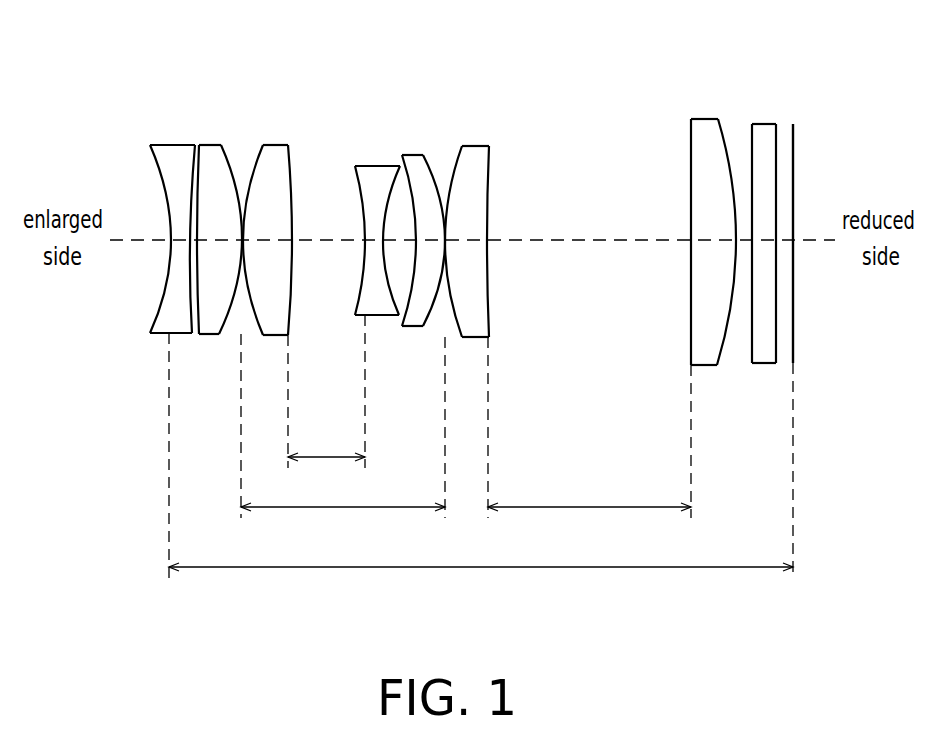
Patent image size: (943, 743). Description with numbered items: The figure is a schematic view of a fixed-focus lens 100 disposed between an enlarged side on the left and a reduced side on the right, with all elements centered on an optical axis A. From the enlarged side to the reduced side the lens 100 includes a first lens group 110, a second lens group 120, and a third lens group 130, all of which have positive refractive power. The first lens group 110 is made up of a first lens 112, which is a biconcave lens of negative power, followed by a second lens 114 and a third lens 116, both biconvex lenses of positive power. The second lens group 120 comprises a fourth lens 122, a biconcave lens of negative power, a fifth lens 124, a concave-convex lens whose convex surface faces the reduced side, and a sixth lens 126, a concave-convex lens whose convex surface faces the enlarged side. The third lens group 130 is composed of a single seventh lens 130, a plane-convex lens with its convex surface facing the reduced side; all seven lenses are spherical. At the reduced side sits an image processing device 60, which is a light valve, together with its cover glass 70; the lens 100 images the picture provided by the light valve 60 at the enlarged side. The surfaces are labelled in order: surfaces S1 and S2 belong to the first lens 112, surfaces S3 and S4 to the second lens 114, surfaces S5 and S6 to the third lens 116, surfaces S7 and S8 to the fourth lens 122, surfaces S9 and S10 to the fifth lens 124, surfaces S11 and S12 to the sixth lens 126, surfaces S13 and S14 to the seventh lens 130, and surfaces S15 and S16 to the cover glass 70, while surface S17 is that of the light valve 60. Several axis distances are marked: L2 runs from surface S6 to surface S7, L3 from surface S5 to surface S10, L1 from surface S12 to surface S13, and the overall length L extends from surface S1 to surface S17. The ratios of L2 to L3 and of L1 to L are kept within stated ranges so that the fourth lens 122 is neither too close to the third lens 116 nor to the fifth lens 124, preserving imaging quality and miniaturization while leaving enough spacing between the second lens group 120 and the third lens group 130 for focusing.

The fixed-focus lens 100 is at (838, 640).
The first lens group 110 is at (150, 428).
The first lens 112 is at (111, 253).
The second lens 114 is at (158, 245).
The third lens 116 is at (218, 231).
The second lens group 120 is at (628, 406).
The fourth lens 122 is at (427, 250).
The fifth lens 124 is at (487, 232).
The sixth lens 126 is at (533, 246).
The third lens group 130 is at (685, 243).
The cover glass 70 is at (770, 245).
The image processing device 60 is at (820, 263).
The optical axis A is at (582, 240).
The surface S1 is at (153, 163).
The surface S2 is at (190, 163).
The surface S3 is at (206, 170).
The surface S4 is at (231, 151).
The surface S5 is at (256, 152).
The surface S6 is at (292, 155).
The surface S7 is at (352, 172).
The surface S8 is at (393, 178).
The surface S9 is at (410, 170).
The surface S10 is at (431, 163).
The surface S11 is at (460, 148).
The surface S12 is at (492, 157).
The surface S13 is at (692, 138).
The surface S14 is at (724, 126).
The surface S15 is at (746, 137).
The surface S16 is at (779, 128).
The surface S17 is at (792, 187).
The overall length L is at (481, 549).
The axis distance L1 is at (589, 489).
The axis distance L2 is at (326, 438).
The axis distance L3 is at (343, 489).